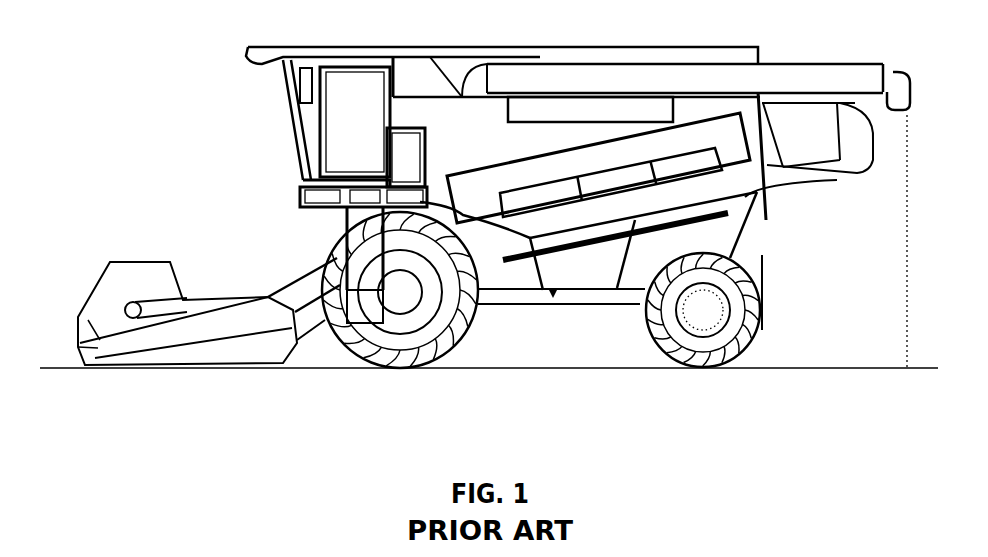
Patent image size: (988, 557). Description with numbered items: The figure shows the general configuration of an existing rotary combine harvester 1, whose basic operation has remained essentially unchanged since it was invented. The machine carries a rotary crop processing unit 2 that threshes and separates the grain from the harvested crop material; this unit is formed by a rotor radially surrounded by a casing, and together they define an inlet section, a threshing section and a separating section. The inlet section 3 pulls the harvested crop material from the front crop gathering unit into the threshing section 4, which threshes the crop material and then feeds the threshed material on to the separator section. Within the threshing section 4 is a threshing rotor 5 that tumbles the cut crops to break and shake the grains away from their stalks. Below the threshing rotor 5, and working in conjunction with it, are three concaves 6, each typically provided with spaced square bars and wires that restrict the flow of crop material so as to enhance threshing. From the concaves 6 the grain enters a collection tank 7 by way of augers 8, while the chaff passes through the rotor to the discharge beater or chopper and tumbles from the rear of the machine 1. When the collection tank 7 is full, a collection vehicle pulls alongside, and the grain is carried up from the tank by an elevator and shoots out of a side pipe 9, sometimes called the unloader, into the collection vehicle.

The combine harvester 1 is at (205, 74).
The rotary crop processing unit 2 is at (99, 285).
The inlet section 3 is at (301, 273).
The threshing section 4 is at (441, 116).
The threshing rotor 5 is at (561, 157).
The concave 6 is at (561, 188).
The collection tank 7 is at (550, 111).
The augers 8 is at (691, 227).
The side pipe 9 is at (893, 75).